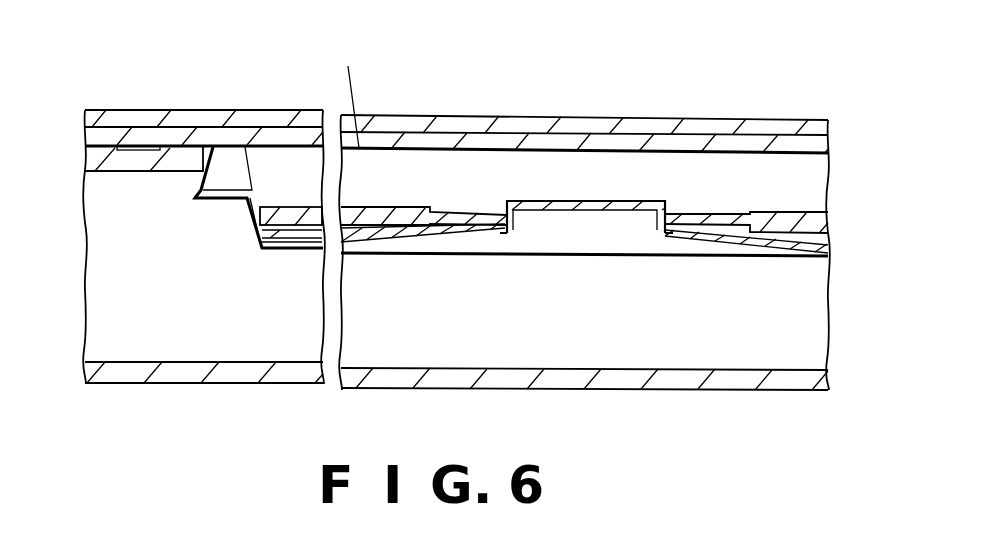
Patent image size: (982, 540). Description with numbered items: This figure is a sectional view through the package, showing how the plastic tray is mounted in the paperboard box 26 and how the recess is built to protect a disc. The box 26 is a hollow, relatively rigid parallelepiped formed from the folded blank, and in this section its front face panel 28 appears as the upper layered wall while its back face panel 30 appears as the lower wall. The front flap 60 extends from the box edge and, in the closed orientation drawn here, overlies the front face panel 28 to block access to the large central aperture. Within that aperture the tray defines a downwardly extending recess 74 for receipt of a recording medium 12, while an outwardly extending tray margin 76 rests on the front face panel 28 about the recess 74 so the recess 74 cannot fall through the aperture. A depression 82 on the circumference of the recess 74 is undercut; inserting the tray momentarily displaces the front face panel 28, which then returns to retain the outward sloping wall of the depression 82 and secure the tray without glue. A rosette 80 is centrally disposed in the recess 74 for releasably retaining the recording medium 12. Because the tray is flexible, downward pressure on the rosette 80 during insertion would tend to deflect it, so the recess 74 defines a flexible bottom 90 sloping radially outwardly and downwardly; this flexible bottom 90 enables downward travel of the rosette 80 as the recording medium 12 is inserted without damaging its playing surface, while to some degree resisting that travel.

The recording medium 12 is at (295, 222).
The box 26 is at (246, 384).
The front face panel 28 is at (153, 162).
The back face panel 30 is at (673, 392).
The front flap 60 is at (385, 113).
The recess 74 is at (370, 257).
The tray margin 76 is at (135, 150).
The rosette 80 is at (628, 201).
The depression 82 is at (235, 168).
The flexible bottom 90 is at (707, 240).